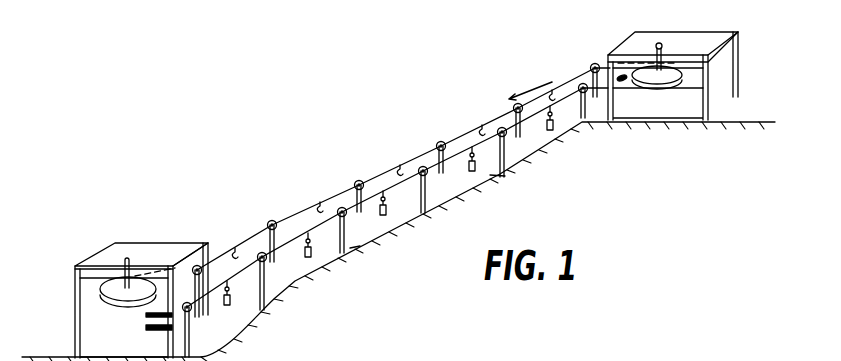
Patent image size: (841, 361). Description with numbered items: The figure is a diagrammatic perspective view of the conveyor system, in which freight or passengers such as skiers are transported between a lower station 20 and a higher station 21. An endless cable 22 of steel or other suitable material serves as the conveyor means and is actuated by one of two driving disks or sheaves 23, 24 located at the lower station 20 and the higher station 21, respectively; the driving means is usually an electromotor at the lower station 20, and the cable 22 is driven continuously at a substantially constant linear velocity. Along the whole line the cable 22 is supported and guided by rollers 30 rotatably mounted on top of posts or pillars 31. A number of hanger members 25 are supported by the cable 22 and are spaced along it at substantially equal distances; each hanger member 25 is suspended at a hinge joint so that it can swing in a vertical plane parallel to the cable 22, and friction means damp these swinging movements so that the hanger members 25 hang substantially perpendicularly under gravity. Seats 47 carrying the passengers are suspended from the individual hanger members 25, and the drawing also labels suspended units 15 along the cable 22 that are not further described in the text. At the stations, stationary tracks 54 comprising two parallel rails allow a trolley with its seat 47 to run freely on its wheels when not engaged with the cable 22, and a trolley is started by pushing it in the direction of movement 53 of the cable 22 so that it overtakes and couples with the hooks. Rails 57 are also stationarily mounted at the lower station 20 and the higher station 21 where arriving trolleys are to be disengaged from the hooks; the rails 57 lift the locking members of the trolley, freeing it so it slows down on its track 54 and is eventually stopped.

The lower station 20 is at (146, 254).
The higher station 21 is at (694, 38).
The endless cable 22 is at (460, 147).
The driving disk or sheave 23 is at (122, 291).
The driving disk or sheave 24 is at (668, 75).
The hanger member 25 is at (398, 170).
The carriers 15 is at (390, 191).
The roller 30 is at (339, 216).
The post or pillar 31 is at (353, 248).
The seat 47 is at (493, 174).
The direction of movement 53 is at (528, 85).
The stationary track 54 is at (149, 316).
The rail 57 is at (626, 90).